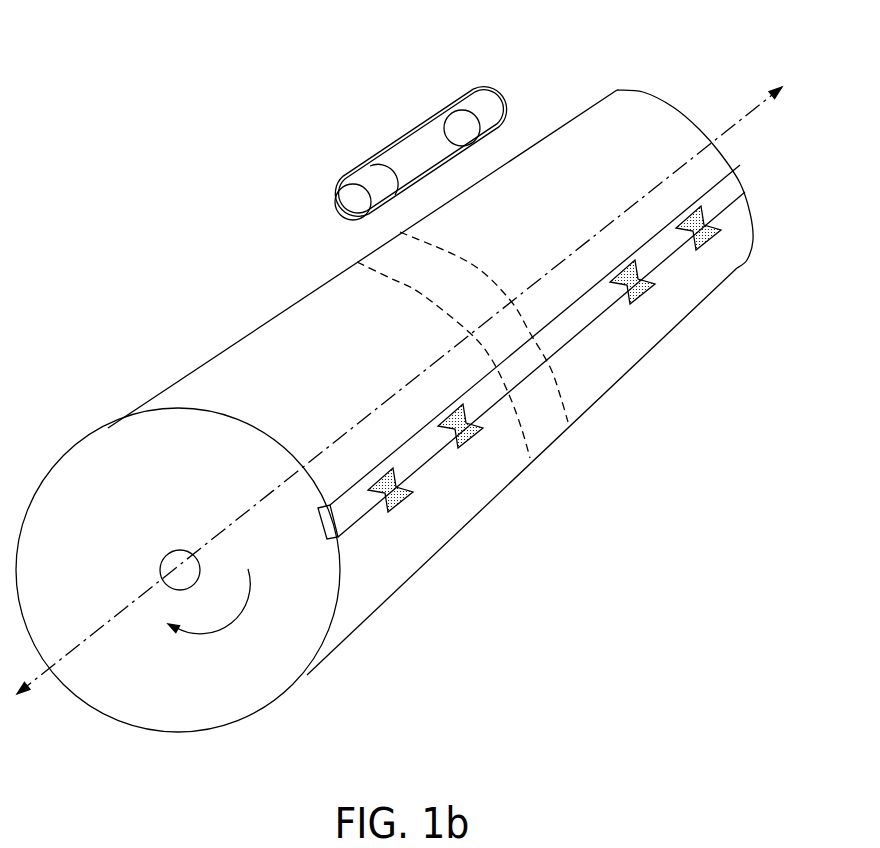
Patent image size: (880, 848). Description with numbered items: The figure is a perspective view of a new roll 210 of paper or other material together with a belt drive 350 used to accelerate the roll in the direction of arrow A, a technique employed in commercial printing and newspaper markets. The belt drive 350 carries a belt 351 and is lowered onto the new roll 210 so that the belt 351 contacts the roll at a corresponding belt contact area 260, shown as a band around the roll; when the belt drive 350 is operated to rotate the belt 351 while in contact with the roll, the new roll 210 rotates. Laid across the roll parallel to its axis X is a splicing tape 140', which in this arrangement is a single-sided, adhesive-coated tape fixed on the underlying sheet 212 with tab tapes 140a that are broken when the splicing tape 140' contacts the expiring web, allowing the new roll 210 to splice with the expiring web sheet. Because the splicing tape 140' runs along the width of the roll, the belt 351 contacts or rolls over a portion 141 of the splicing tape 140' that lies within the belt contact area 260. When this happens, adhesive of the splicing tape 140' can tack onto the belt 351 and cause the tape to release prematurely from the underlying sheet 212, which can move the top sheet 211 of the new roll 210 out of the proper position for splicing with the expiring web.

The new roll 210 is at (423, 395).
The top sheet 211 is at (212, 372).
The underlying sheet 212 is at (397, 568).
The portion of the splicing tape 141 is at (530, 357).
The tab tapes 140a is at (468, 440).
The splicing tape 140' is at (709, 231).
The belt contact area 260 is at (420, 296).
The belt drive 350 is at (418, 117).
The belt 351 is at (398, 136).